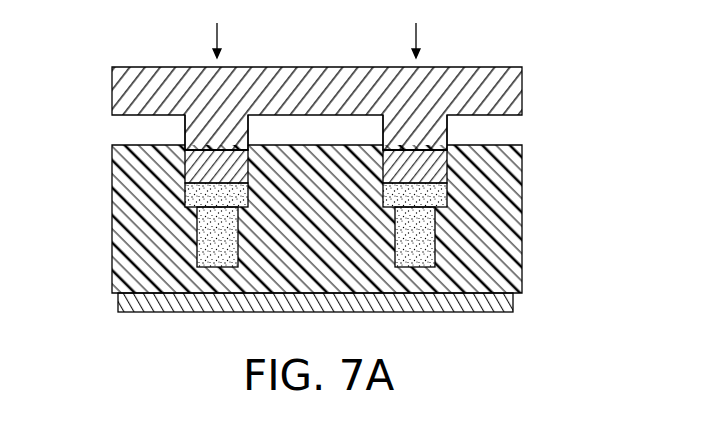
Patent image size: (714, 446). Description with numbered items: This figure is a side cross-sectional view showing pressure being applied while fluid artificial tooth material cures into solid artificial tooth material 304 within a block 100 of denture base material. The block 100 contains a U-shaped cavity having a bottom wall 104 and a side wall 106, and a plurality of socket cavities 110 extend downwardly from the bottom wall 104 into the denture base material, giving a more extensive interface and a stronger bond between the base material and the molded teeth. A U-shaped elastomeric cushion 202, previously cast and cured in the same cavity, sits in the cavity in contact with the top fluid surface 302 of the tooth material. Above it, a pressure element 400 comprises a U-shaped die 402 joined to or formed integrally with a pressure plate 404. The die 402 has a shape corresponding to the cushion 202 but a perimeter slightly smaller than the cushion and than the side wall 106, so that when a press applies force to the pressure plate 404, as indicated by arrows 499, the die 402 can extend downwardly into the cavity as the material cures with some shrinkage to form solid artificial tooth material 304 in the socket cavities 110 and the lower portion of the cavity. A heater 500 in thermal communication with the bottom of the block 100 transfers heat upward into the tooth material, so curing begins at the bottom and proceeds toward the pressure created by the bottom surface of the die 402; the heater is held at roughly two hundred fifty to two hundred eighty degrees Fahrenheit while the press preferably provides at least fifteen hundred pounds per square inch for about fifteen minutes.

The pressure element 400 is at (324, 177).
The block of denture base material 100 is at (500, 138).
The bottom wall 104 is at (197, 208).
The side wall 106 is at (186, 149).
The socket cavities 110 is at (198, 251).
The U-shaped elastomeric cushion 202 is at (217, 160).
The top fluid surface 302 is at (196, 194).
The solid artificial tooth material 304 is at (200, 236).
The U-shaped die 402 is at (190, 133).
The pressure plate 404 is at (318, 66).
The arrows 499 is at (215, 32).
The heater 500 is at (495, 306).